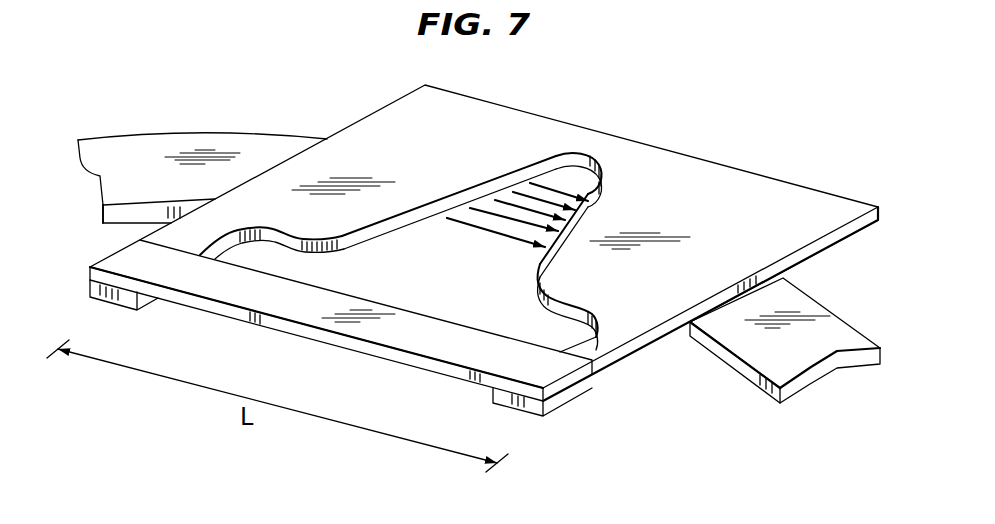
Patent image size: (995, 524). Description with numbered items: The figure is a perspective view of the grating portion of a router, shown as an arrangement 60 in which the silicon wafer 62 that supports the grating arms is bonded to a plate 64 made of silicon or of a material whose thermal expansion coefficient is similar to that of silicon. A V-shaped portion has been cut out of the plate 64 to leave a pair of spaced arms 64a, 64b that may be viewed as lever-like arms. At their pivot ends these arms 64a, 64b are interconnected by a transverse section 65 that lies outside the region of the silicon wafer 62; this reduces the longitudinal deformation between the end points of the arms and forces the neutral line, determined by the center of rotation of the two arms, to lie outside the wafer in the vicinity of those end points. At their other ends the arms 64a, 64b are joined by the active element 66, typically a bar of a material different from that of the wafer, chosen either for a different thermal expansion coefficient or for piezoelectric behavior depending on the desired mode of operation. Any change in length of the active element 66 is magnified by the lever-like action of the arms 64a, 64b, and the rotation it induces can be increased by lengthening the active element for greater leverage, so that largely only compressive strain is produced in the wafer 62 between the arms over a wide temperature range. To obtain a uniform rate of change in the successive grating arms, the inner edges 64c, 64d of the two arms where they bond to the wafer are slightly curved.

The arrangement 60 is at (229, 354).
The silicon wafer 62 is at (774, 347).
The plate 64 is at (735, 187).
The spaced arm 64a is at (612, 332).
The spaced arm 64b is at (190, 235).
The inner edge of arm 64c is at (480, 182).
The inner edge of arm 64d is at (537, 265).
The transverse section 65 is at (593, 158).
The active element 66 is at (410, 335).